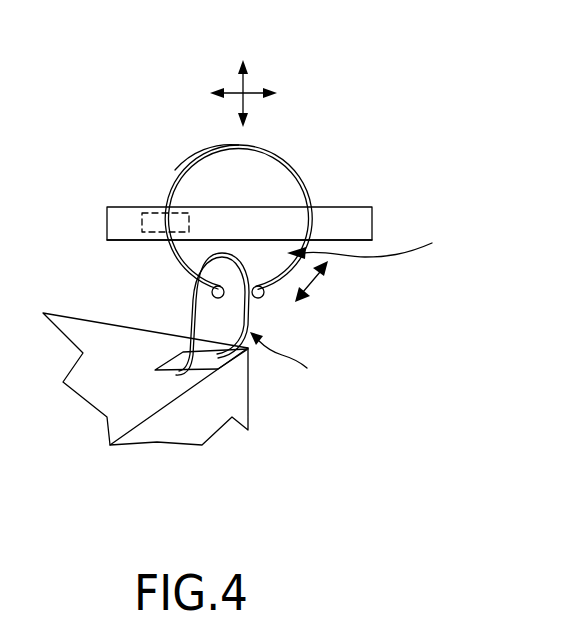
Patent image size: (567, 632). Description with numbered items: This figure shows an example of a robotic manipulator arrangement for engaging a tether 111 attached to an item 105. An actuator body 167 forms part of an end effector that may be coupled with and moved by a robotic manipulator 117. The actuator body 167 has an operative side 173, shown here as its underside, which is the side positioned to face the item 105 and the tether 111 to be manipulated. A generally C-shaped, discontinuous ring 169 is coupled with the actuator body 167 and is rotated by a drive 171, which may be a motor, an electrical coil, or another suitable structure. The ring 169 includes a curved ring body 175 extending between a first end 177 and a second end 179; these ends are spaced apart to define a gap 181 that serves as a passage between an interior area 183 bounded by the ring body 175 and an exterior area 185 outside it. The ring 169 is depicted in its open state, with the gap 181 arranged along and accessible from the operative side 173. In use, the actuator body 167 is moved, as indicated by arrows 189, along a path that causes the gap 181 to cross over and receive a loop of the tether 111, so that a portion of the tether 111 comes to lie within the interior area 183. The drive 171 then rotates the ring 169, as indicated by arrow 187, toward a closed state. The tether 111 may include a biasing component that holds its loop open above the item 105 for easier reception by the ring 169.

The item 105 is at (250, 399).
The tether 111 is at (173, 361).
The robotic manipulator 117 is at (395, 108).
The actuator body 167 is at (373, 213).
The ring 169 is at (305, 177).
The drive 171 is at (160, 207).
The operative side 173 is at (122, 240).
The ring body 175 is at (193, 165).
The first end 177 is at (212, 293).
The second end 179 is at (263, 297).
The gap 181 is at (234, 301).
The interior area 183 is at (378, 243).
The exterior area 185 is at (297, 357).
The arrow 187 is at (318, 283).
The arrows 189 is at (250, 91).